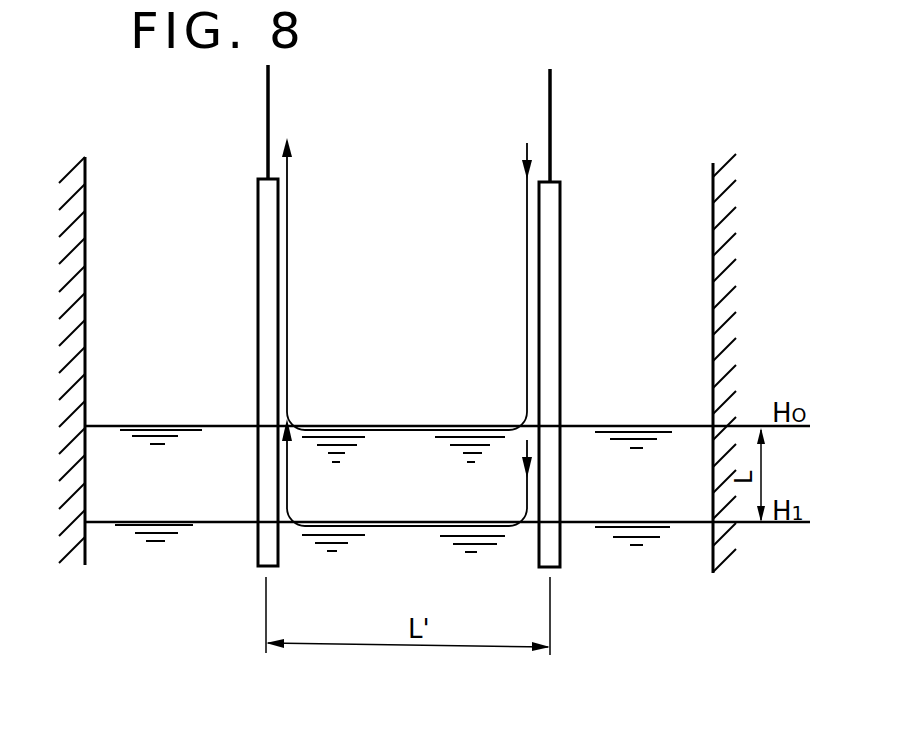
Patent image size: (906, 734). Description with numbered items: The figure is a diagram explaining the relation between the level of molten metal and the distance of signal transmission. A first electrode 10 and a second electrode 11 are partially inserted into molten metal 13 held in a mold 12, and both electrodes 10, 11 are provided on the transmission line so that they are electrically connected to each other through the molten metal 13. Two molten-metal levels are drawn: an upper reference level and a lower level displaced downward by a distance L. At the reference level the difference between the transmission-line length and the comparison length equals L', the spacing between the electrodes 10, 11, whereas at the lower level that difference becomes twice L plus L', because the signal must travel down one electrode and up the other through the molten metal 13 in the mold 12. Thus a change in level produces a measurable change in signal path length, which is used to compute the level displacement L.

The first electrode 10 is at (559, 238).
The second electrode 11 is at (258, 245).
The mold 12 is at (713, 298).
The molten metal 13 is at (120, 540).